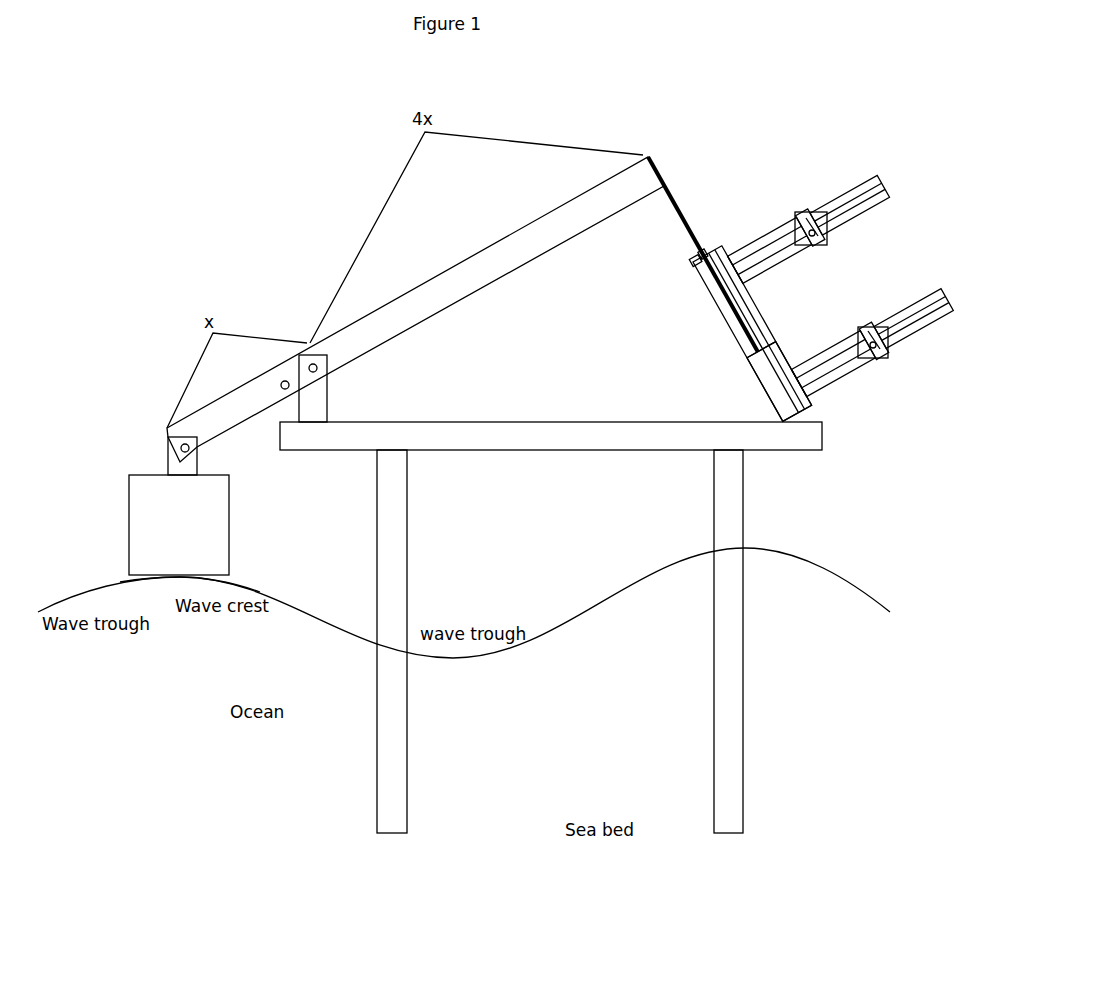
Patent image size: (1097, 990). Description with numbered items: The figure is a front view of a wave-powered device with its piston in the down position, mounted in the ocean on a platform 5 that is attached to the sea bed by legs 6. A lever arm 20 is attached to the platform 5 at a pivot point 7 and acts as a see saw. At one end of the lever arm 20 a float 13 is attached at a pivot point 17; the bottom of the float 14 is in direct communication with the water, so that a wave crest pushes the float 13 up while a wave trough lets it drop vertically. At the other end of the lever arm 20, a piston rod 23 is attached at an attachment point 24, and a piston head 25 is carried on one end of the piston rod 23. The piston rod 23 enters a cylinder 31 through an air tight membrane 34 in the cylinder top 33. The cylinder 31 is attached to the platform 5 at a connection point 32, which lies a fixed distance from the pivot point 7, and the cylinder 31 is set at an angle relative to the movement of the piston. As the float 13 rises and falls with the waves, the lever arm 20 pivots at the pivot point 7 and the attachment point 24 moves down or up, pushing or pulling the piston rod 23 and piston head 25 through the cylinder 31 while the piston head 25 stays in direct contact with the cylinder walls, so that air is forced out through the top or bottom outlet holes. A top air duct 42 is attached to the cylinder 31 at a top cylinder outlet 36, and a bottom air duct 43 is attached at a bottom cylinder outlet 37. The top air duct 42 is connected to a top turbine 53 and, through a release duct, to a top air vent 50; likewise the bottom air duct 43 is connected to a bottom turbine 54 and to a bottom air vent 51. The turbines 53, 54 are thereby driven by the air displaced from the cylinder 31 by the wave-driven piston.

The platform 5 is at (562, 422).
The legs 6 is at (560, 641).
The pivot point 7 is at (320, 368).
The float 13 is at (127, 487).
The bottom of the float 14 is at (233, 575).
The pivot point 17 is at (168, 453).
The lever arm 20 is at (480, 292).
The piston rod 23 is at (677, 193).
The attachment point 24 is at (653, 157).
The piston head 25 is at (755, 360).
The cylinder 31 is at (703, 290).
The connection point 32 is at (782, 420).
The cylinder top 33 is at (671, 246).
The air tight membrane 34 is at (703, 253).
The top cylinder outlet 36 is at (743, 283).
The bottom cylinder outlet 37 is at (807, 397).
The top air duct 42 is at (783, 263).
The bottom air duct 43 is at (840, 380).
The top air vent 50 is at (885, 180).
The bottom air vent 51 is at (943, 287).
The top turbine 53 is at (826, 236).
The bottom turbine 54 is at (885, 345).